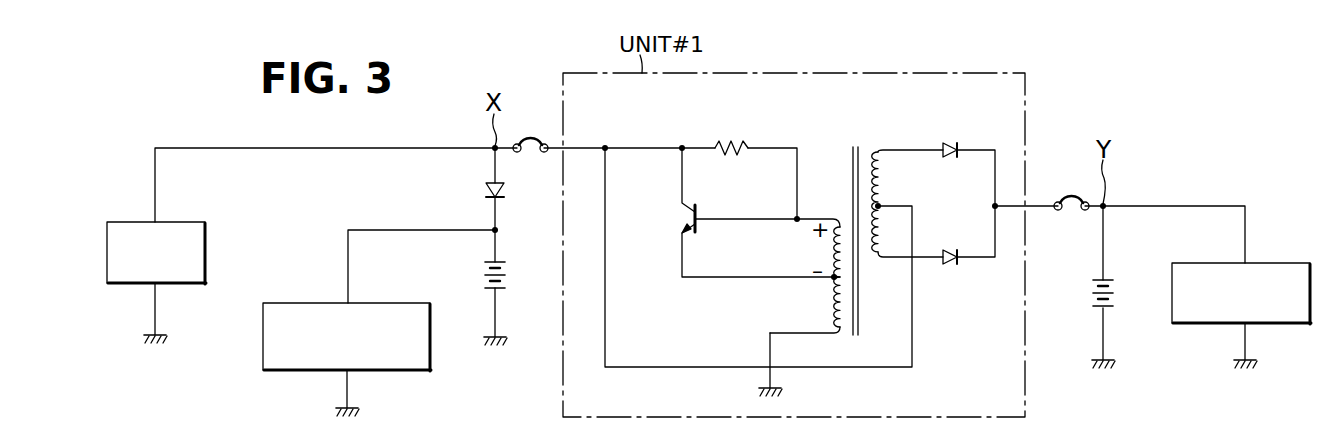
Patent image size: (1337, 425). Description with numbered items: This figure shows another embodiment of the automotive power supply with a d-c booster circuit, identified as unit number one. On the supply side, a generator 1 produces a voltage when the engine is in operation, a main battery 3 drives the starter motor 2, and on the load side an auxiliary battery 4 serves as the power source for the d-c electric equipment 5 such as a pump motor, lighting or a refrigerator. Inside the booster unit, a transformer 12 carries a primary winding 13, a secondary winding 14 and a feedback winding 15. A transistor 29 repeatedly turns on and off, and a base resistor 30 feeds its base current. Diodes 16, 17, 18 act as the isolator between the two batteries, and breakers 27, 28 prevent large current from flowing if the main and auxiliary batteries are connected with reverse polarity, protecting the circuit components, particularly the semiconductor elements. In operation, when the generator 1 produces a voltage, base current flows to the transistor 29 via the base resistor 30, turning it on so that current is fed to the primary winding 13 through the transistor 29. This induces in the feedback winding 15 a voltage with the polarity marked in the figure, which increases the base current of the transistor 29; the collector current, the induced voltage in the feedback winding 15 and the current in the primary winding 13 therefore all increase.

The generator 1 is at (107, 250).
The starter motor 2 is at (307, 303).
The main battery 3 is at (486, 274).
The auxiliary battery 4 is at (1109, 293).
The d-c electric equipment 5 is at (1281, 263).
The transformer 12 is at (851, 147).
The primary winding 13 is at (834, 315).
The secondary winding 14 is at (881, 160).
The feedback winding 15 is at (834, 255).
The diode 16 is at (487, 191).
The diode 17 is at (950, 143).
The diode 18 is at (950, 263).
The breaker 27 is at (530, 139).
The breaker 28 is at (1067, 197).
The transistor 29 is at (688, 219).
The base resistor 30 is at (733, 146).